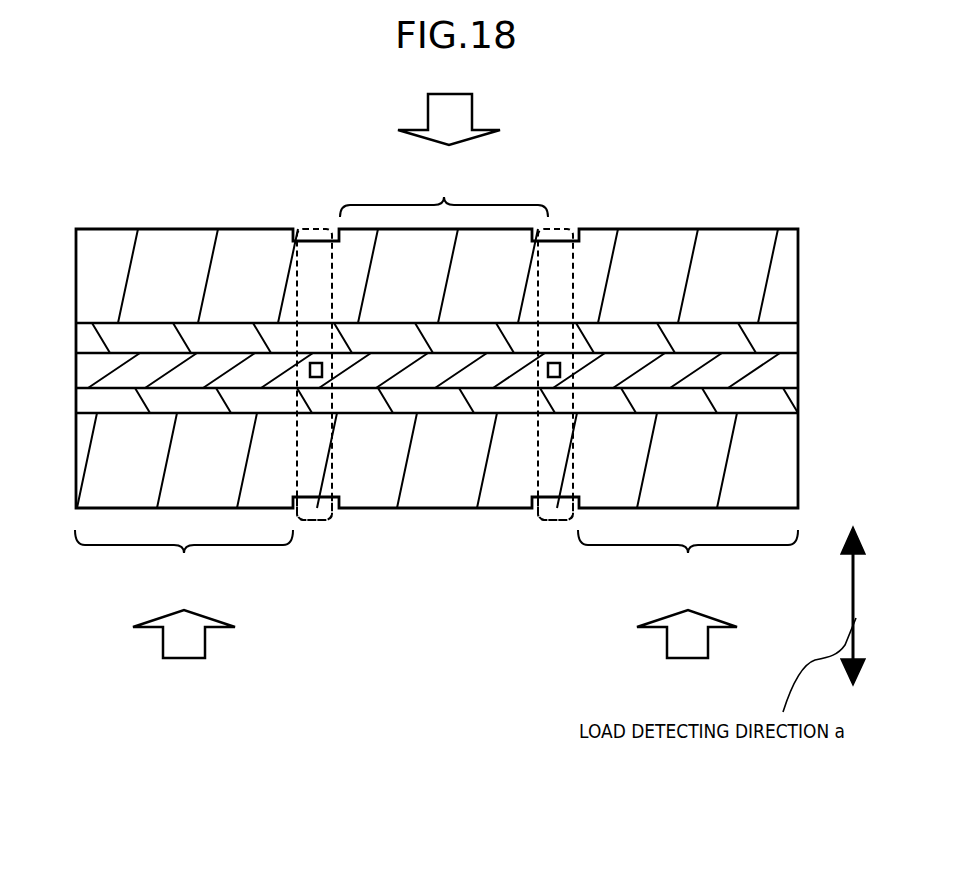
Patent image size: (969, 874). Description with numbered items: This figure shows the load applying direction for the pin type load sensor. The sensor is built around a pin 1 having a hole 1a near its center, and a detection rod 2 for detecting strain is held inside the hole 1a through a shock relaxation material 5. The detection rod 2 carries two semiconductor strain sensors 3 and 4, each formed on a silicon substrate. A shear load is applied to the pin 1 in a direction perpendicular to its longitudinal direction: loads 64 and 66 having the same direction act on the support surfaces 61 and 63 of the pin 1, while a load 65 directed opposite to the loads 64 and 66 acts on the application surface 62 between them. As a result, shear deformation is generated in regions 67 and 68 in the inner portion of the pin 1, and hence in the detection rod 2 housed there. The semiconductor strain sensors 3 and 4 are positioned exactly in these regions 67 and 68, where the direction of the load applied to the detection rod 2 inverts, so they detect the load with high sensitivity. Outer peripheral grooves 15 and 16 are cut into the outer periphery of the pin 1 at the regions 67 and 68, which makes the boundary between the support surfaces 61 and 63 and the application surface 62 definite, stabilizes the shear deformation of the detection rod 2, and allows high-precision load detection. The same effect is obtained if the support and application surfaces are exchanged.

The pin 1 is at (135, 278).
The hole 1a is at (178, 323).
The detection rod 2 is at (707, 367).
The semiconductor strain sensor 3 is at (313, 362).
The semiconductor strain sensor 4 is at (562, 362).
The shock relaxation material 5 is at (755, 333).
The outer peripheral groove 15 is at (307, 232).
The outer peripheral groove 16 is at (559, 232).
The support surface 61 is at (184, 563).
The application surface 62 is at (444, 186).
The support surface 63 is at (688, 563).
The load 64 is at (180, 636).
The load 65 is at (455, 112).
The load 66 is at (683, 635).
The region 67 is at (316, 521).
The region 68 is at (552, 521).